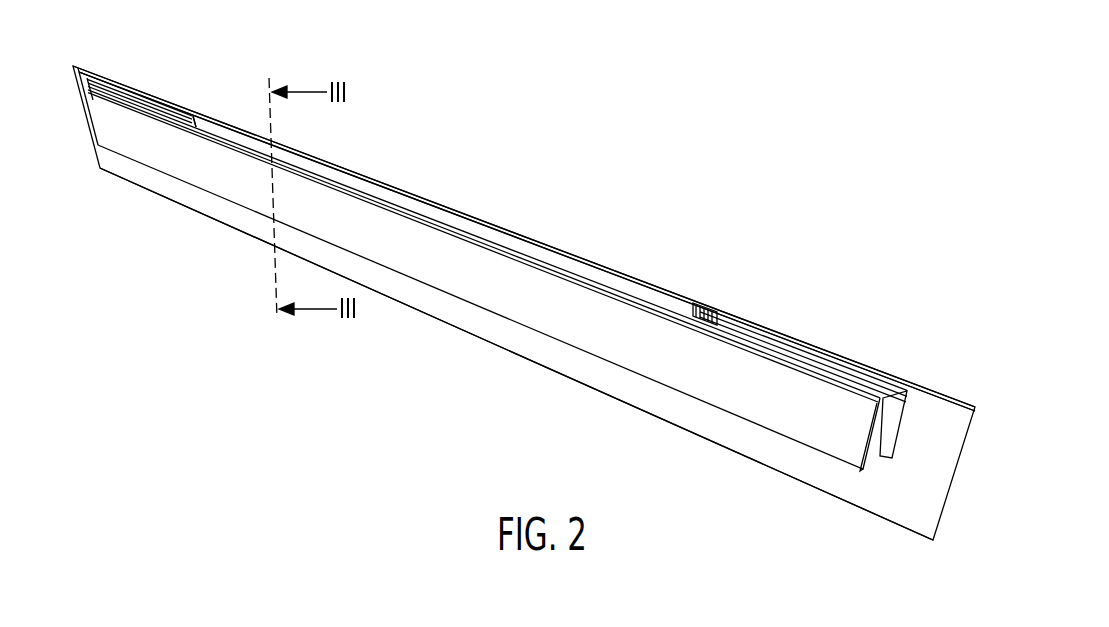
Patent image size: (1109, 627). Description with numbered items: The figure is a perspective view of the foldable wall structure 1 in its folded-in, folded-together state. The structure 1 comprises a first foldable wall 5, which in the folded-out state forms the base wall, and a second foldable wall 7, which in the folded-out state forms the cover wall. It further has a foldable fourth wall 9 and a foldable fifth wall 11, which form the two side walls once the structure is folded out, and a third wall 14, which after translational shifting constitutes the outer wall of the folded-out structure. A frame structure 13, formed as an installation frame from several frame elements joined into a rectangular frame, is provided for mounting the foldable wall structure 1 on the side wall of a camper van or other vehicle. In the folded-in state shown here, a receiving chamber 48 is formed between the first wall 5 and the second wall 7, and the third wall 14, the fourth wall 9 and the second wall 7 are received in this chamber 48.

The foldable wall structure 1 is at (757, 493).
The first foldable wall 5 is at (378, 173).
The second foldable wall 7 is at (566, 330).
The foldable fourth wall 9 is at (191, 116).
The foldable fifth wall 11 is at (710, 311).
The frame structure 13 is at (938, 409).
The third wall 14 is at (769, 352).
The receiving chamber 48 is at (650, 280).